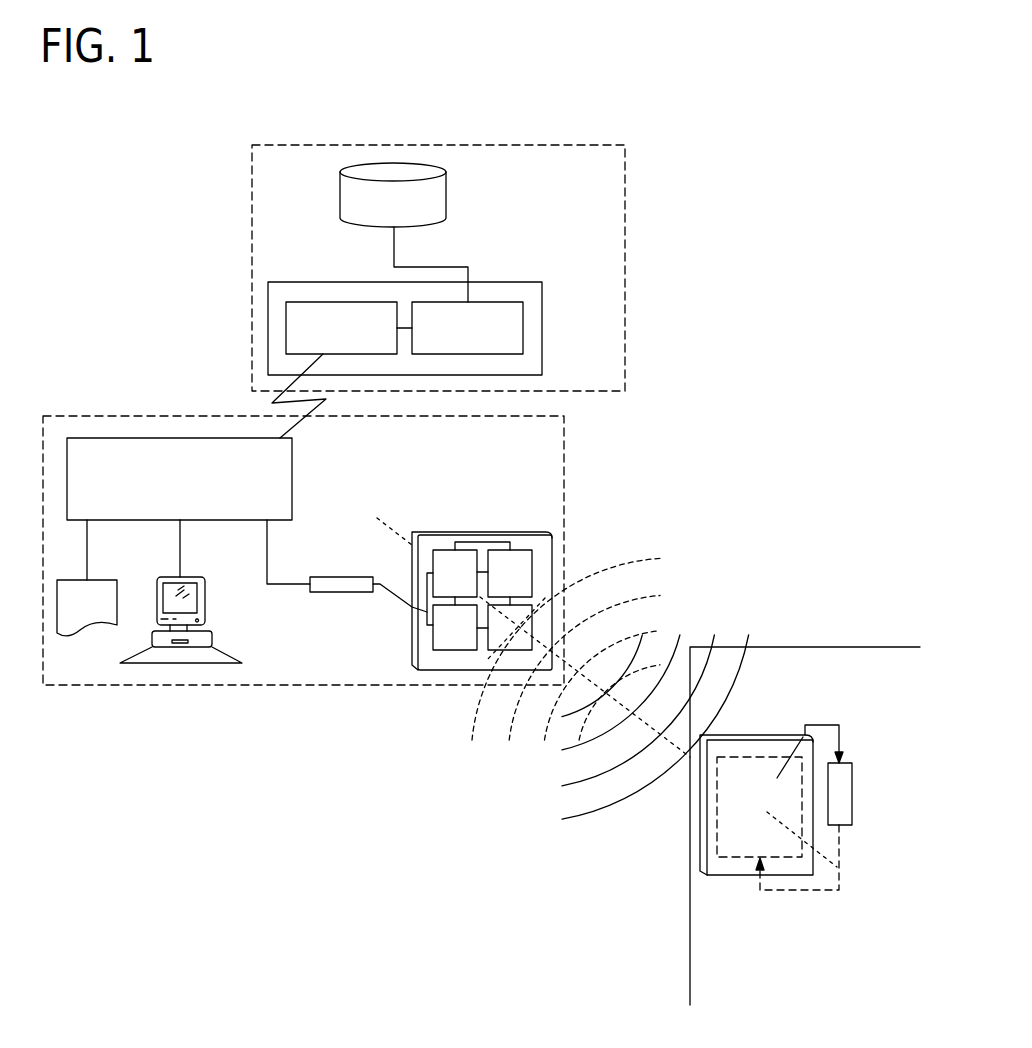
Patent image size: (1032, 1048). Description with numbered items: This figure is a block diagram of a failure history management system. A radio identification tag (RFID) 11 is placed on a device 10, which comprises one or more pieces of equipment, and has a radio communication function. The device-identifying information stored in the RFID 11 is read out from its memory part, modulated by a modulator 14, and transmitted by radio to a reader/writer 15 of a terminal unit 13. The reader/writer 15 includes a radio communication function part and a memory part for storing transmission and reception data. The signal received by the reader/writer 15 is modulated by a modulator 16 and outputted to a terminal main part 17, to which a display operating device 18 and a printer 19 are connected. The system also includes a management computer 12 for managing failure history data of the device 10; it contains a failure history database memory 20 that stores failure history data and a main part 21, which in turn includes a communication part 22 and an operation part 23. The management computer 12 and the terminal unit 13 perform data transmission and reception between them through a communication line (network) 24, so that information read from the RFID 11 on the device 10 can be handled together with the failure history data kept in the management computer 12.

The device 10 is at (820, 647).
The radio identification tag (RFID) 11 is at (758, 737).
The management computer 12 is at (625, 285).
The terminal unit 13 is at (565, 442).
The modulator 14 is at (852, 778).
The reader/writer 15 is at (501, 532).
The modulator 16 is at (341, 593).
The terminal main part 17 is at (292, 472).
The display operating device 18 is at (205, 604).
The printer 19 is at (100, 579).
The failure history database memory 20 is at (447, 190).
The main part 21 is at (543, 357).
The communication part 22 is at (286, 324).
The operation part 23 is at (523, 327).
The communication line (network) 24 is at (284, 386).